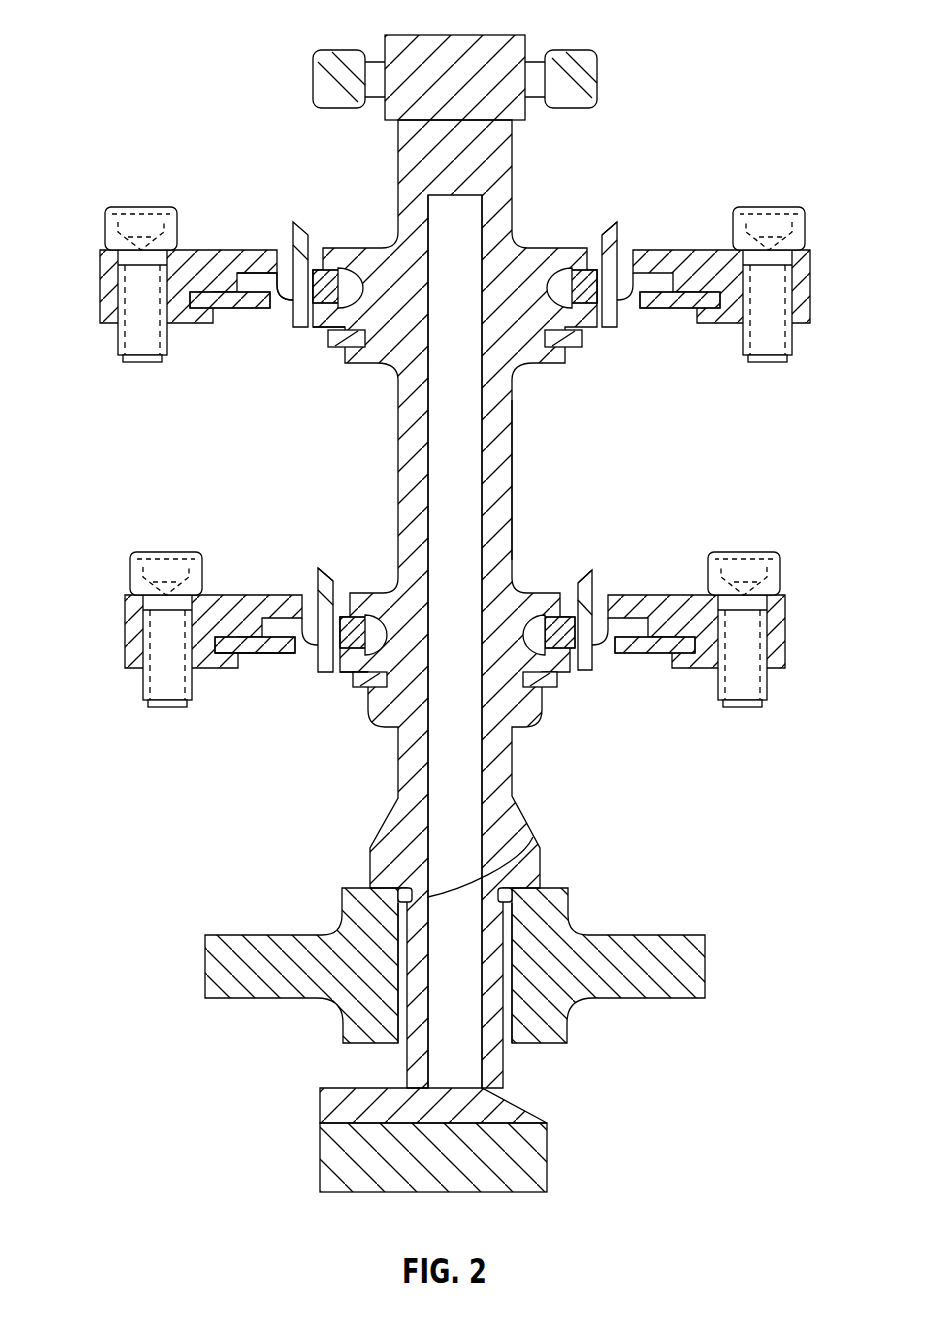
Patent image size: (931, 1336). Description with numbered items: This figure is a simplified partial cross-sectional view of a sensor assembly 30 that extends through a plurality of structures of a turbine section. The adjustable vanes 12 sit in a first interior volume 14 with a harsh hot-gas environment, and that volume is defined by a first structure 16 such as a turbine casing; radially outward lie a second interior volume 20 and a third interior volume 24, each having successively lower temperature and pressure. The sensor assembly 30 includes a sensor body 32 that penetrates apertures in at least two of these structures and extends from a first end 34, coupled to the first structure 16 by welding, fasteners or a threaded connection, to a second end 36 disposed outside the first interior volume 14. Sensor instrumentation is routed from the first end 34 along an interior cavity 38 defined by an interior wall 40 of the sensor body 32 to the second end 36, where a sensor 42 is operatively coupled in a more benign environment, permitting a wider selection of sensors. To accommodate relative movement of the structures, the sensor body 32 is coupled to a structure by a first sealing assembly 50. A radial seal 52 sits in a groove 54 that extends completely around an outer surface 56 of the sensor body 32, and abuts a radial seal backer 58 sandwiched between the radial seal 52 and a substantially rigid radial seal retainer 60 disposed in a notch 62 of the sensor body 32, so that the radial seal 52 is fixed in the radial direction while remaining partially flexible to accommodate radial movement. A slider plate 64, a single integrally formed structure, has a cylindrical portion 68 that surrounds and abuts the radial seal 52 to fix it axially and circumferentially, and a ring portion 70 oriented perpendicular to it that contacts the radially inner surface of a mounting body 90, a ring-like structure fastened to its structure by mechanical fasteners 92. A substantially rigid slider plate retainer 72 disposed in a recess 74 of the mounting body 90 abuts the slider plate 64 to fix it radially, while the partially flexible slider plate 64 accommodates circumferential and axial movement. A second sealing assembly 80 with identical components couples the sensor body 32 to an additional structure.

The adjustable vanes 12 is at (393, 1085).
The first interior volume 14 is at (552, 1160).
The first structure 16 is at (215, 962).
The second interior volume 20 is at (424, 1026).
The third interior volume 24 is at (500, 604).
The sensor assembly 30 is at (492, 65).
The sensor body 32 is at (515, 748).
The first end 34 is at (505, 1085).
The second end 36 is at (525, 35).
The interior cavity 38 is at (445, 795).
The interior wall 40 is at (533, 837).
The sensor 42 is at (462, 40).
The first sealing assembly 50 is at (318, 574).
The radial seal 52 is at (320, 270).
The groove 54 is at (560, 280).
The outer surface 56 is at (512, 470).
The radial seal backer 58 is at (312, 330).
The radial seal retainer 60 is at (562, 336).
The notch 62 is at (342, 350).
The slider plate 64 is at (609, 218).
The cylindrical portion 68 is at (614, 242).
The ring portion 70 is at (298, 275).
The slider plate retainer 72 is at (660, 303).
The recess 74 is at (250, 656).
The second sealing assembly 80 is at (262, 247).
The mounting body 90 is at (110, 290).
The mechanical fasteners 92 is at (106, 222).